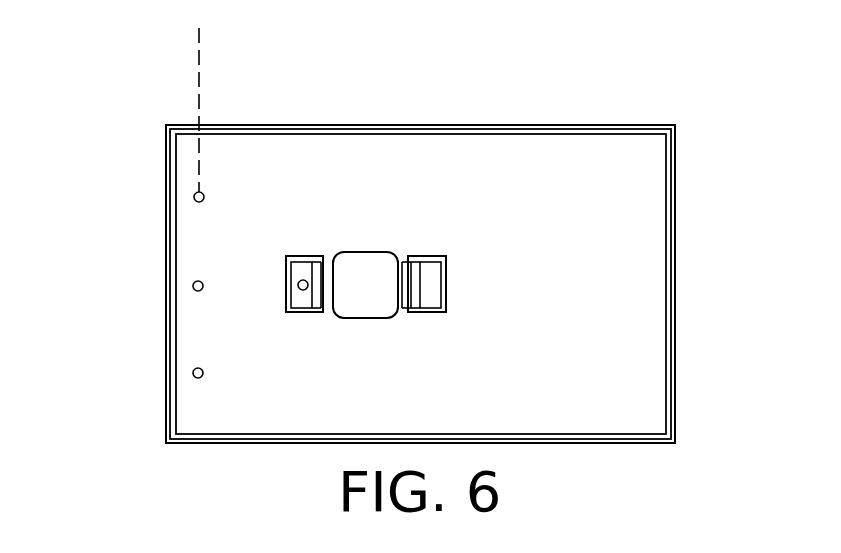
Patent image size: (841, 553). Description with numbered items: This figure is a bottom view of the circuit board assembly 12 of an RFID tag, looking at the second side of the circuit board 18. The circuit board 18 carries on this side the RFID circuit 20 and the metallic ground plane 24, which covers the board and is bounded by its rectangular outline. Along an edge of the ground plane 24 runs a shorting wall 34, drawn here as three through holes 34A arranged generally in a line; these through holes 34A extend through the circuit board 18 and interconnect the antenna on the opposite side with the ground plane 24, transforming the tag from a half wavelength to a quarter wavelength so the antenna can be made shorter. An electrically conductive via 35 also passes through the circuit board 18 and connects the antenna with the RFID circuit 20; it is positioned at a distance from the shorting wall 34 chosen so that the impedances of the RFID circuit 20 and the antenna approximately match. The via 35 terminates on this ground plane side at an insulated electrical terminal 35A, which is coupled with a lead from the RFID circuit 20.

The circuit board assembly 12 is at (590, 55).
The circuit board 18 is at (167, 430).
The metallic ground plane 24 is at (645, 179).
The shorting wall 34 is at (197, 78).
The through holes 34A is at (194, 197).
The electrically conductive via 35 is at (298, 284).
The insulated electrical terminal 35A is at (300, 307).
The RFID circuit 20 is at (357, 252).